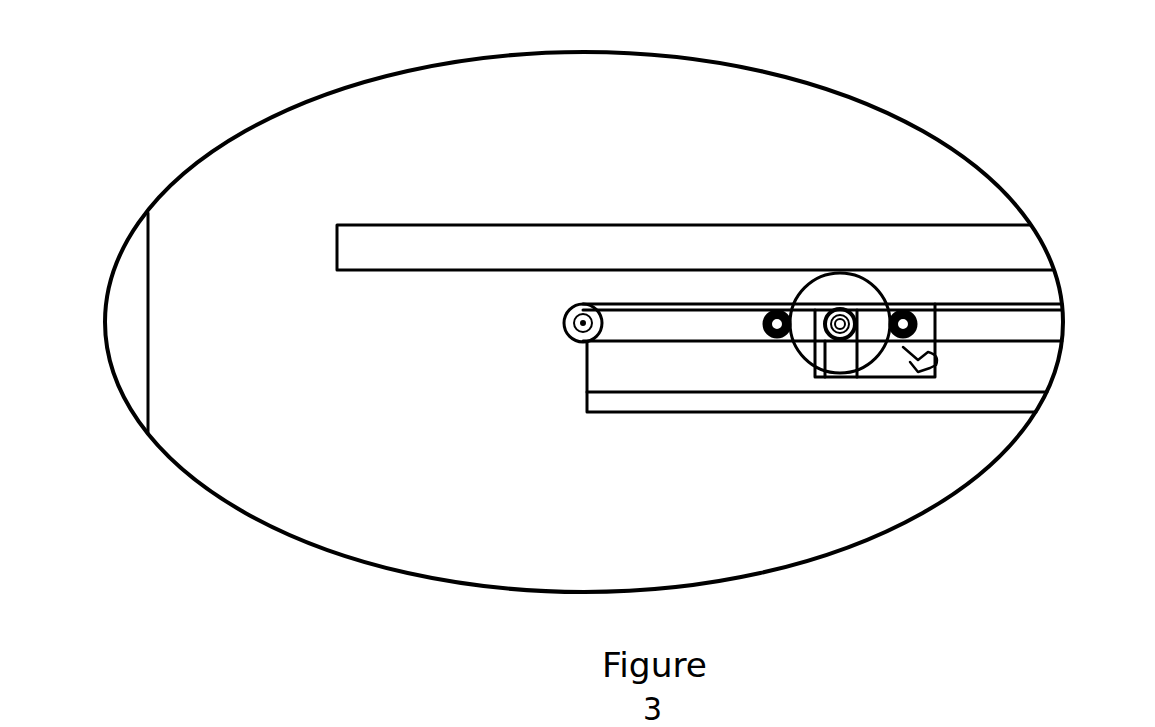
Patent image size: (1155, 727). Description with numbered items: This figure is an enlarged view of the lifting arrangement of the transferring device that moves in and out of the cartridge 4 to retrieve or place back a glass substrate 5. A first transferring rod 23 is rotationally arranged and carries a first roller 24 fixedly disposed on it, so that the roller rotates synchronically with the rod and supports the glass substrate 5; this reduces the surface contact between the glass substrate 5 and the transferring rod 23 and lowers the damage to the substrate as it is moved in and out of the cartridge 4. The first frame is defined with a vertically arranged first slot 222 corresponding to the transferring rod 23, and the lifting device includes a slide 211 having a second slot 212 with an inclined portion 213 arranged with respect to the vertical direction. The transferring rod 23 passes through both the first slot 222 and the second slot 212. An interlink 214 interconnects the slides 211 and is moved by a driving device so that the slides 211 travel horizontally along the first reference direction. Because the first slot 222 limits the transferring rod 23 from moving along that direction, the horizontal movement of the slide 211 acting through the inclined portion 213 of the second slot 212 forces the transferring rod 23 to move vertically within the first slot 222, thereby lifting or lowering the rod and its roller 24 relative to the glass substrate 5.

The cartridge 4 is at (147, 283).
The glass substrate 5 is at (457, 233).
The first transferring rod 23 is at (878, 302).
The first roller 24 is at (857, 286).
The slide 211 is at (937, 345).
The second slot 212 is at (888, 343).
The inclined portion 213 is at (865, 337).
The interlink 214 is at (1023, 343).
The first slot 222 is at (842, 367).